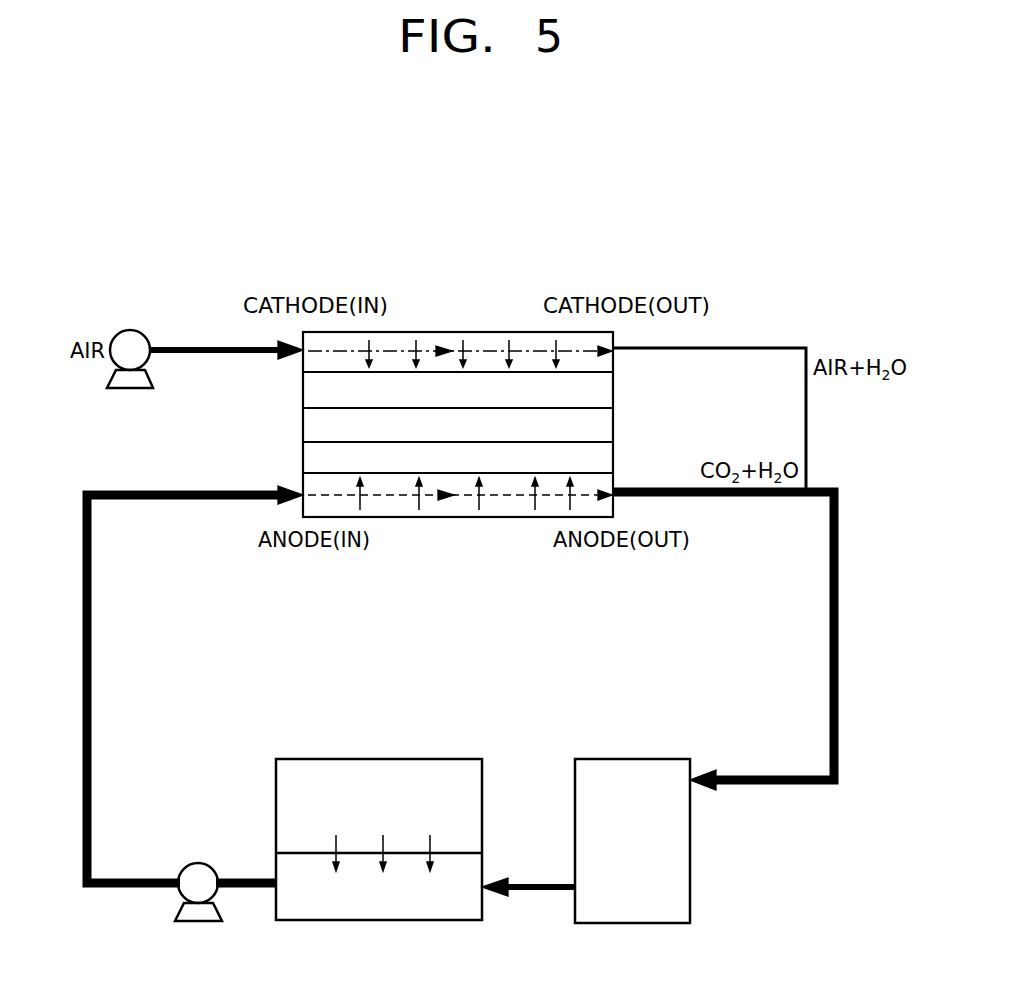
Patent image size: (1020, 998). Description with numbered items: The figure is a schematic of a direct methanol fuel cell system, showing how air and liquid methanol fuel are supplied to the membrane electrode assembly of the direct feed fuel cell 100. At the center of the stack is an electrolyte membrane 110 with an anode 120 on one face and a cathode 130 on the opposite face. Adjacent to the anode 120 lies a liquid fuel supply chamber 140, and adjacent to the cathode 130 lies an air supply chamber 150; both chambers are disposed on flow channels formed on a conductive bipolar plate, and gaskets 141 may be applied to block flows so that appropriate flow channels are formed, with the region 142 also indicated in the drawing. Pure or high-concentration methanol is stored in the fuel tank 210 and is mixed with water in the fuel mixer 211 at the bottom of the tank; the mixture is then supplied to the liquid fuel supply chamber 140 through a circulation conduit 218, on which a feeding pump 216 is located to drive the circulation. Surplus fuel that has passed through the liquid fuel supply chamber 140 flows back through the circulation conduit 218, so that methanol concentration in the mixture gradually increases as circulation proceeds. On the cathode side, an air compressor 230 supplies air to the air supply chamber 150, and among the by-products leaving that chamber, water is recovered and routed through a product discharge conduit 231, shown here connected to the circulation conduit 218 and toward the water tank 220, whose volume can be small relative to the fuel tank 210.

The direct feed fuel cell 100 is at (500, 408).
The electrolyte membrane 110 is at (613, 425).
The anode 120 is at (613, 458).
The cathode 130 is at (613, 392).
The liquid fuel supply chamber 140 is at (613, 513).
The gaskets 141 is at (404, 503).
The anode fuel diffusion path 142 is at (513, 485).
The air supply chamber 150 is at (613, 342).
The fuel tank 210 is at (416, 805).
The fuel mixer 211 is at (482, 862).
The feeding pump 216 is at (198, 862).
The circulation conduit 218 is at (92, 650).
The water tank 220 is at (633, 923).
The air compressor 230 is at (130, 328).
The product discharge conduit 231 is at (755, 348).